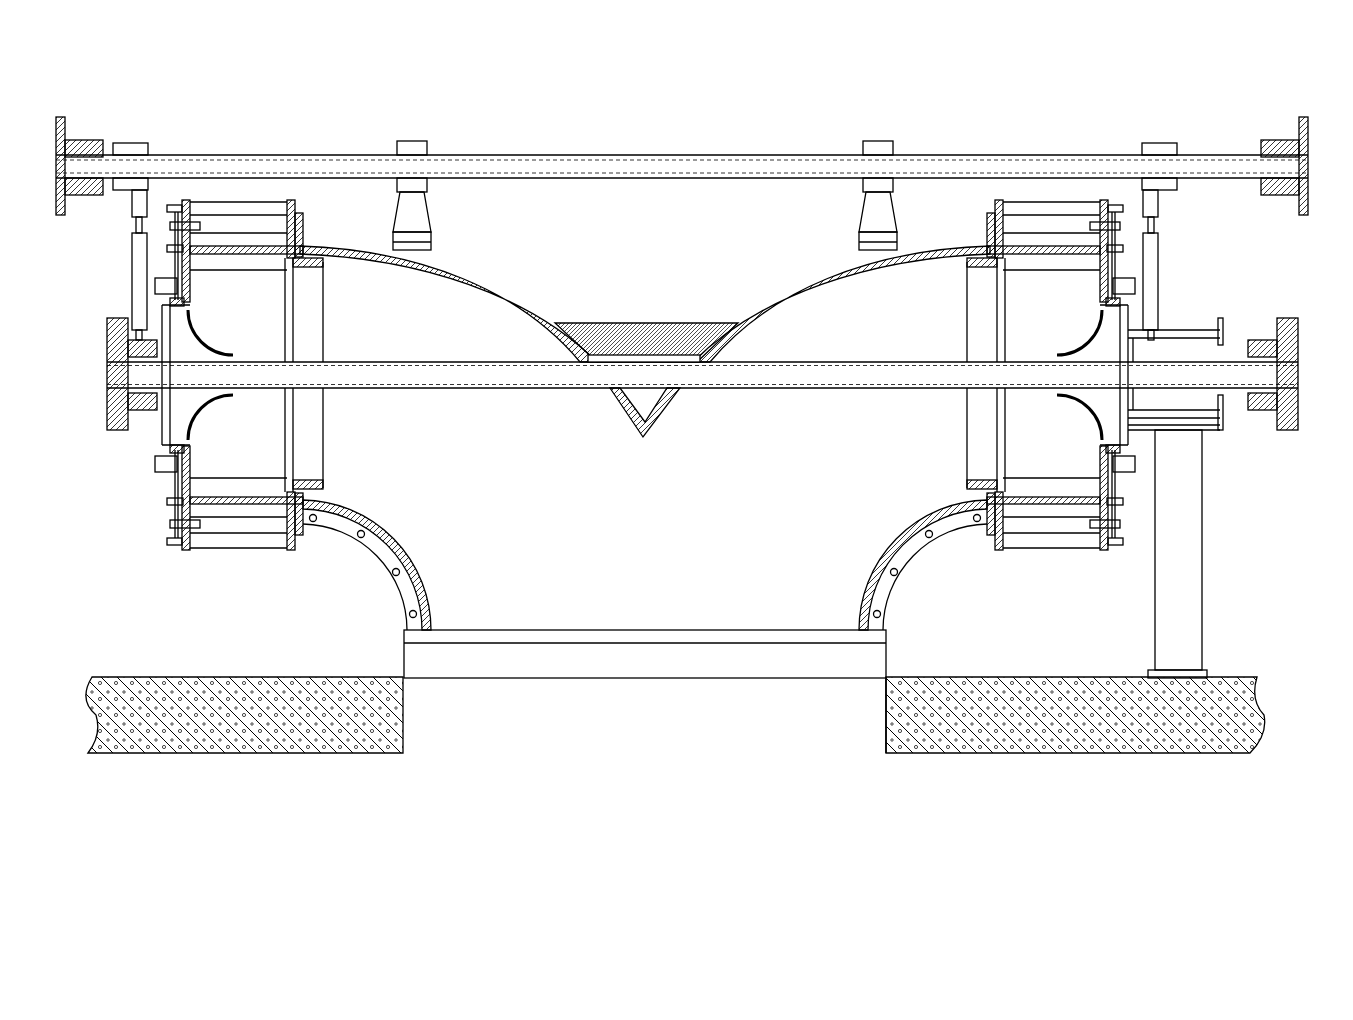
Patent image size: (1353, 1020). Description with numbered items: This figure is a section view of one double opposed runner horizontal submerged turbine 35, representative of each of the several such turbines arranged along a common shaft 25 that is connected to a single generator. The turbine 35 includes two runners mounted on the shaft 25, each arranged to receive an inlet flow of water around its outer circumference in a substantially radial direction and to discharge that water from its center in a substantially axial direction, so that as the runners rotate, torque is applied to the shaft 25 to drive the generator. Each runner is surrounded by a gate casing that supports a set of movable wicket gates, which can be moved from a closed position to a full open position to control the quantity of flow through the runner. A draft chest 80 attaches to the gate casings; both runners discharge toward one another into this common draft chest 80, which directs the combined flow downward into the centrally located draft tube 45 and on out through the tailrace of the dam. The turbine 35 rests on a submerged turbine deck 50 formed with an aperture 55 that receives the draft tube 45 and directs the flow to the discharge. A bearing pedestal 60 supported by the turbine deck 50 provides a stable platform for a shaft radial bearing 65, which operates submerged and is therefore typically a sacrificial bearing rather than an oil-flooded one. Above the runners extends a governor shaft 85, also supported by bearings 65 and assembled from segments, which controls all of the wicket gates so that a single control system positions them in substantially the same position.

The double opposed runner horizontal submerged turbine 35 is at (1168, 88).
The governor shaft 85 is at (541, 164).
The shaft 25 is at (527, 372).
The draft chest 80 is at (800, 276).
The shaft radial bearing 65 is at (1188, 342).
The bearing pedestal 60 is at (1183, 527).
The draft tube 45 is at (893, 660).
The submerged turbine deck 50 is at (1226, 676).
The aperture 55 is at (886, 727).